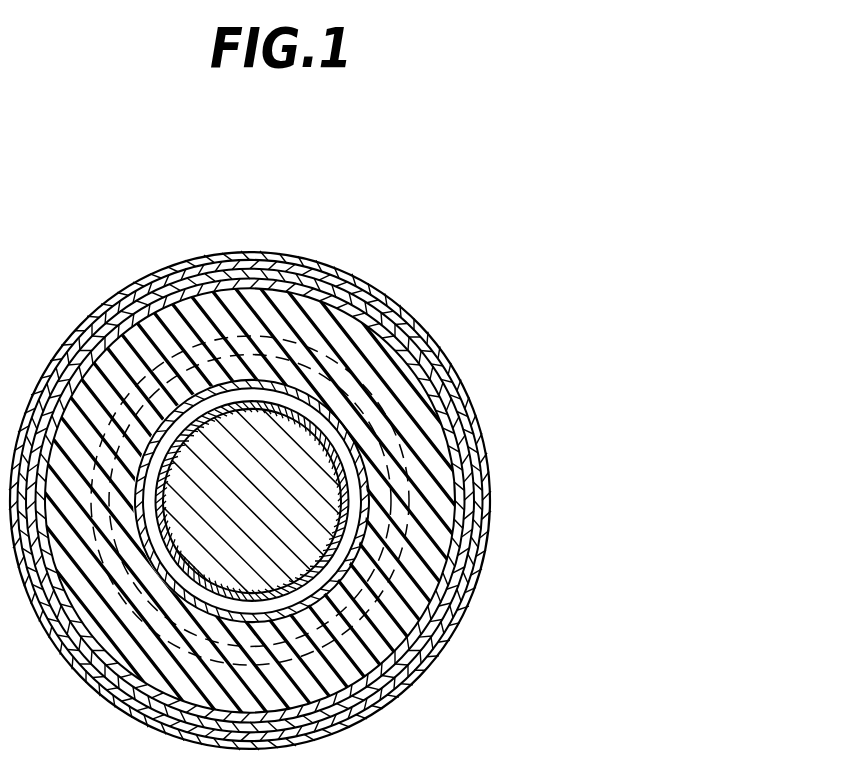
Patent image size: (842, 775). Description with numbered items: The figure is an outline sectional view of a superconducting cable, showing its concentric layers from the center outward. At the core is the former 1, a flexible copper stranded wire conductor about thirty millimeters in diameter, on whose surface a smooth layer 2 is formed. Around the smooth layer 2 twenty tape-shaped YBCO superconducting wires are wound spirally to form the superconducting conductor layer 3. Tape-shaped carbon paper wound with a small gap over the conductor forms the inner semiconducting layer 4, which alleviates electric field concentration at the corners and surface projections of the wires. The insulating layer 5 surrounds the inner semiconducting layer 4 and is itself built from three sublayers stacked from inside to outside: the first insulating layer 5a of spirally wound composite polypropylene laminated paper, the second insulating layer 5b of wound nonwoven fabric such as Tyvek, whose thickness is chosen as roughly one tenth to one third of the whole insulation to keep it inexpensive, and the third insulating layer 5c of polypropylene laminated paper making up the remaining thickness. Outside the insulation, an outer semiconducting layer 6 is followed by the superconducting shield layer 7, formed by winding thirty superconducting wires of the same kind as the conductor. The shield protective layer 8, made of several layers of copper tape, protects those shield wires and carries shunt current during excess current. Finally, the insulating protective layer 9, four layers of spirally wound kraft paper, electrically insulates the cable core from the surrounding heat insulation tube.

The former 1 is at (292, 422).
The smooth layer 2 is at (323, 412).
The superconducting conductor layer 3 is at (354, 427).
The inner semiconducting layer 4 is at (374, 447).
The insulating layer 5 is at (640, 472).
The first insulating layer 5a is at (378, 487).
The second insulating layer 5b is at (400, 523).
The third insulating layer 5c is at (427, 562).
The outer semiconducting layer 6 is at (438, 612).
The superconducting shield layer 7 is at (423, 642).
The shield protective layer 8 is at (412, 677).
The insulating protective layer 9 is at (390, 713).